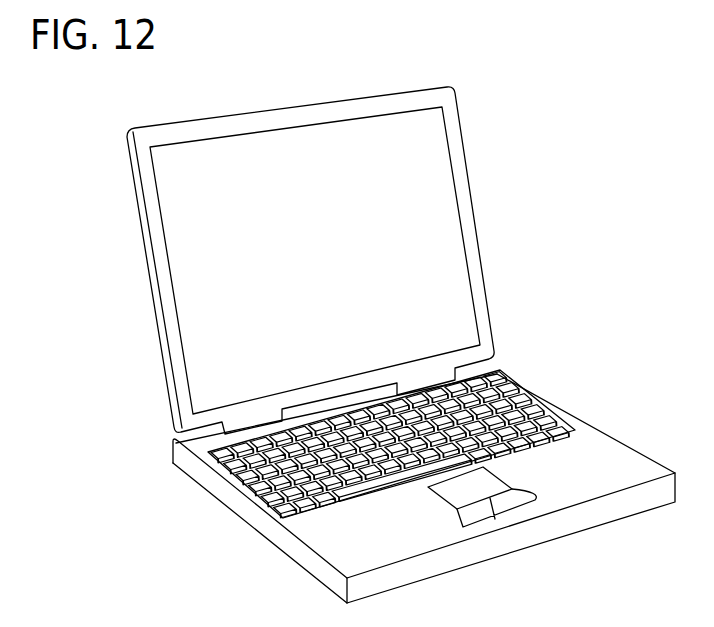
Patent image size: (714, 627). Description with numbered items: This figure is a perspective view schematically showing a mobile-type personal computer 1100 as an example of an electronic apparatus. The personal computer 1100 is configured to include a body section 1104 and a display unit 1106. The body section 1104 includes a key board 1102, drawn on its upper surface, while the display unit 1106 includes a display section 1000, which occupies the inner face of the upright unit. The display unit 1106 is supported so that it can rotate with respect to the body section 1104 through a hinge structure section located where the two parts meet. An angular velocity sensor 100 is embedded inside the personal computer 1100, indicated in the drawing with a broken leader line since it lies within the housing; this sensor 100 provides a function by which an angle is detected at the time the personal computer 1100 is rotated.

The personal computer 1100 is at (488, 108).
The display unit 1106 is at (470, 178).
The display section 1000 is at (283, 153).
The key board 1102 is at (528, 397).
The body section 1104 is at (415, 545).
The angular velocity sensor 100 is at (612, 462).